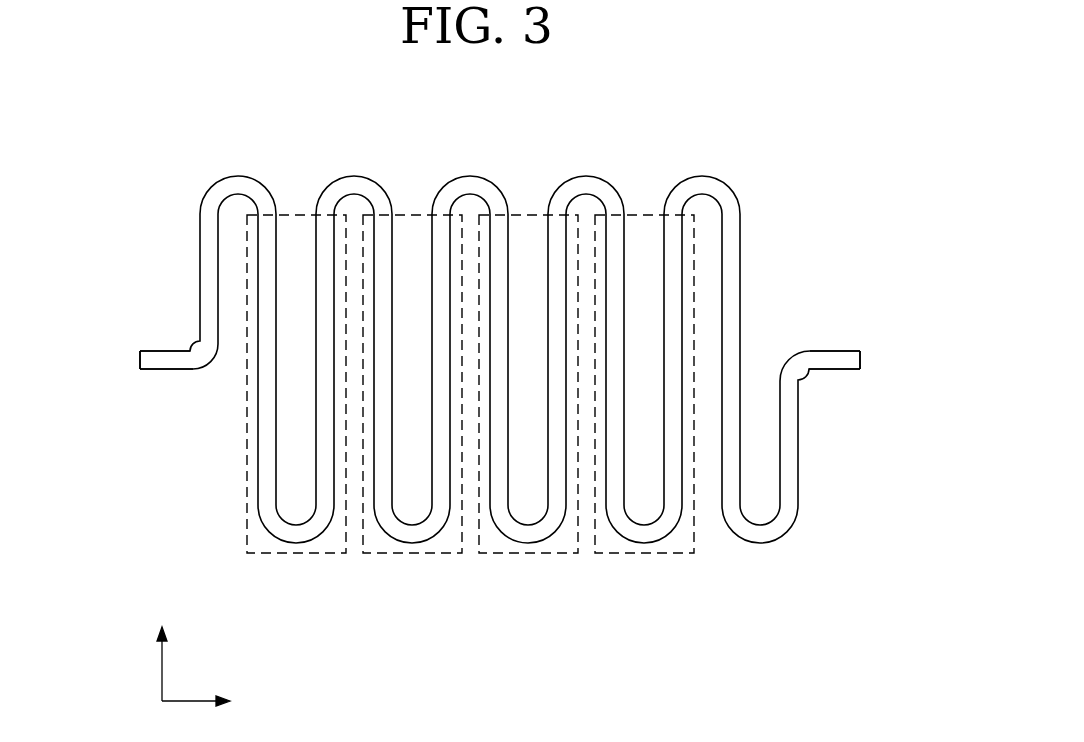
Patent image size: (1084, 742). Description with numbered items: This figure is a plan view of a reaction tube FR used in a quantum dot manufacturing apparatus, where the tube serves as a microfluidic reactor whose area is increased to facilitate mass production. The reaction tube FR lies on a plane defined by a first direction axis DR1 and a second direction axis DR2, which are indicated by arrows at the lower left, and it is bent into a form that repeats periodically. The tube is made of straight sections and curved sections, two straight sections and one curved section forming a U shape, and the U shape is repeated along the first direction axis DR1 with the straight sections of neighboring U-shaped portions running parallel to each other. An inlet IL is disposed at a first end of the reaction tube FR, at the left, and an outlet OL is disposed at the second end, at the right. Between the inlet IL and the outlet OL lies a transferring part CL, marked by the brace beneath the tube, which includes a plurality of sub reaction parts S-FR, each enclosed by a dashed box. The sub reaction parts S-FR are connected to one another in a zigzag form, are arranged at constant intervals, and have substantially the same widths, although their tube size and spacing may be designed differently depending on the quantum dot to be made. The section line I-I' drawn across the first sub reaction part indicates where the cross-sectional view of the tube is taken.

The reaction tube FR is at (773, 153).
The inlet IL is at (152, 358).
The outlet OL is at (848, 359).
The sub reaction part S-FR is at (298, 554).
The transferring part CL is at (262, 618).
The section line I-I' I is at (267, 407).
The section line I- I' is at (298, 407).
The first direction axis DR1 is at (216, 700).
The second direction axis DR2 is at (163, 650).